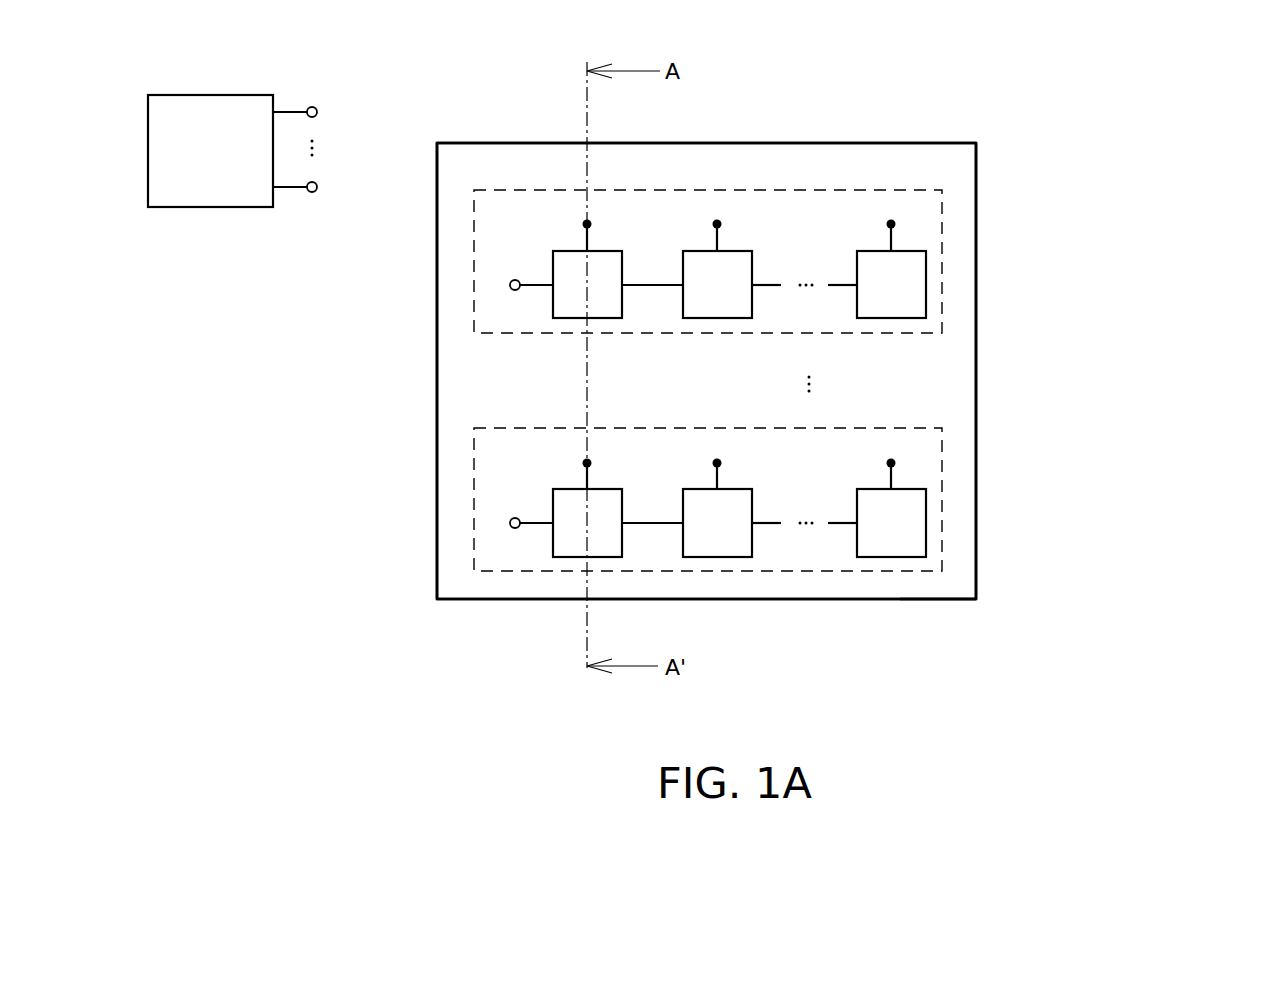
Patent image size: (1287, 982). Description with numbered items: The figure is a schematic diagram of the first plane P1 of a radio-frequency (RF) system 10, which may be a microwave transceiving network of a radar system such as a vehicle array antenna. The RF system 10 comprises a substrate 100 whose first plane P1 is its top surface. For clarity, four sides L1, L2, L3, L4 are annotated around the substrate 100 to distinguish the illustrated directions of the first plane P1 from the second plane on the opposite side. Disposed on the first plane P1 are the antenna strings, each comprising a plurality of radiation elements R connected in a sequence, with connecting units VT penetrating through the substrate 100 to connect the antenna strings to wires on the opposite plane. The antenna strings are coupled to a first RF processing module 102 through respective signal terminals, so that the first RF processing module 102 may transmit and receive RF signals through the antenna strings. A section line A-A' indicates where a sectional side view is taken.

The radio-frequency (RF) system 10 is at (1134, 109).
The substrate 100 is at (937, 143).
The first RF processing module 102 is at (273, 95).
The first plane P1 is at (930, 590).
The side L1 is at (417, 371).
The side L2 is at (706, 620).
The side L3 is at (996, 371).
The side L4 is at (706, 127).